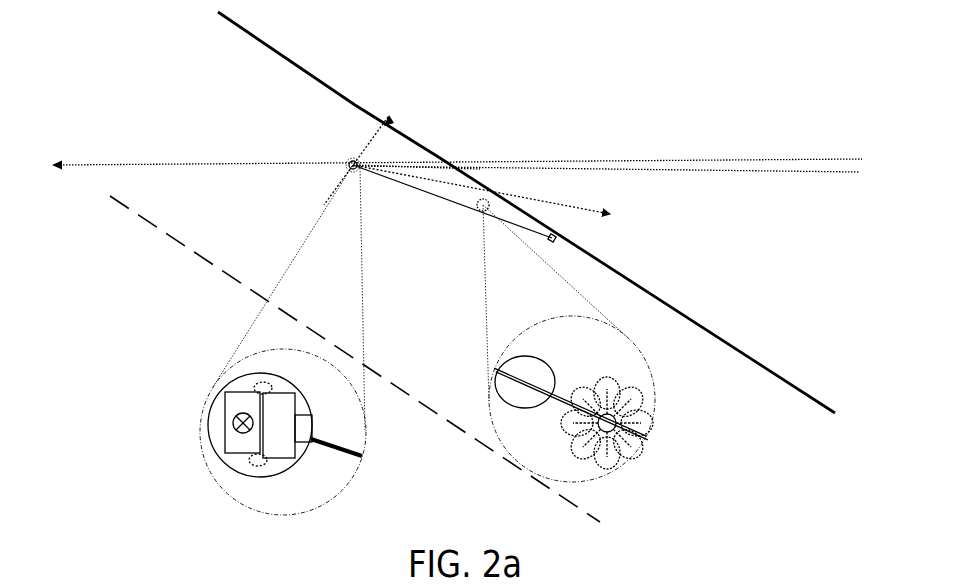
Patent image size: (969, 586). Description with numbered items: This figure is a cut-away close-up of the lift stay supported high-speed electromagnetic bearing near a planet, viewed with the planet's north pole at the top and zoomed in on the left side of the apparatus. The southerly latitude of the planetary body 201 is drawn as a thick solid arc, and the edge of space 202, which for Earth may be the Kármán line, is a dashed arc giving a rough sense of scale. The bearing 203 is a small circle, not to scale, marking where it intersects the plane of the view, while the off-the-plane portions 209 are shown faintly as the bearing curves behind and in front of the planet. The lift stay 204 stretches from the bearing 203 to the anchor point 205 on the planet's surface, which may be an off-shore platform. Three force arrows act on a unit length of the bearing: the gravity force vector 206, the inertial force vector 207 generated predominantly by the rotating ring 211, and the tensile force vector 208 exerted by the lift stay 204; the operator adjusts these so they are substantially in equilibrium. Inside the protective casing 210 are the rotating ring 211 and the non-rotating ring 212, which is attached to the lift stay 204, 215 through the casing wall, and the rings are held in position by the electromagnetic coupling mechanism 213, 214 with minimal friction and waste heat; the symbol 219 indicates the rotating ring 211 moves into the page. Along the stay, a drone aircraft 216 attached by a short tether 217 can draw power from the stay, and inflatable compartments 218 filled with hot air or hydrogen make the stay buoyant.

The planetary body 201 is at (318, 74).
The edge of space 202 is at (173, 242).
The bearing 203 is at (348, 162).
The lift stay 204 is at (467, 202).
The anchor point 205 is at (557, 238).
The gravity force vector 206 is at (372, 148).
The inertial force vector 207 is at (260, 167).
The tensile force vector 208 is at (539, 200).
The off-the-plane portions of the bearing 209 is at (521, 161).
The protective casing 210 is at (215, 455).
The rotating ring 211 is at (222, 439).
The non-rotating ring 212 is at (259, 403).
The coupling mechanism 213 is at (253, 388).
The coupling mechanism 214 is at (254, 463).
The lift stay 215 is at (346, 445).
The drone aircraft 216 is at (571, 442).
The tether 217 is at (560, 401).
The inflatable compartments 218 is at (538, 356).
The direction-of-motion symbol 219 is at (230, 421).